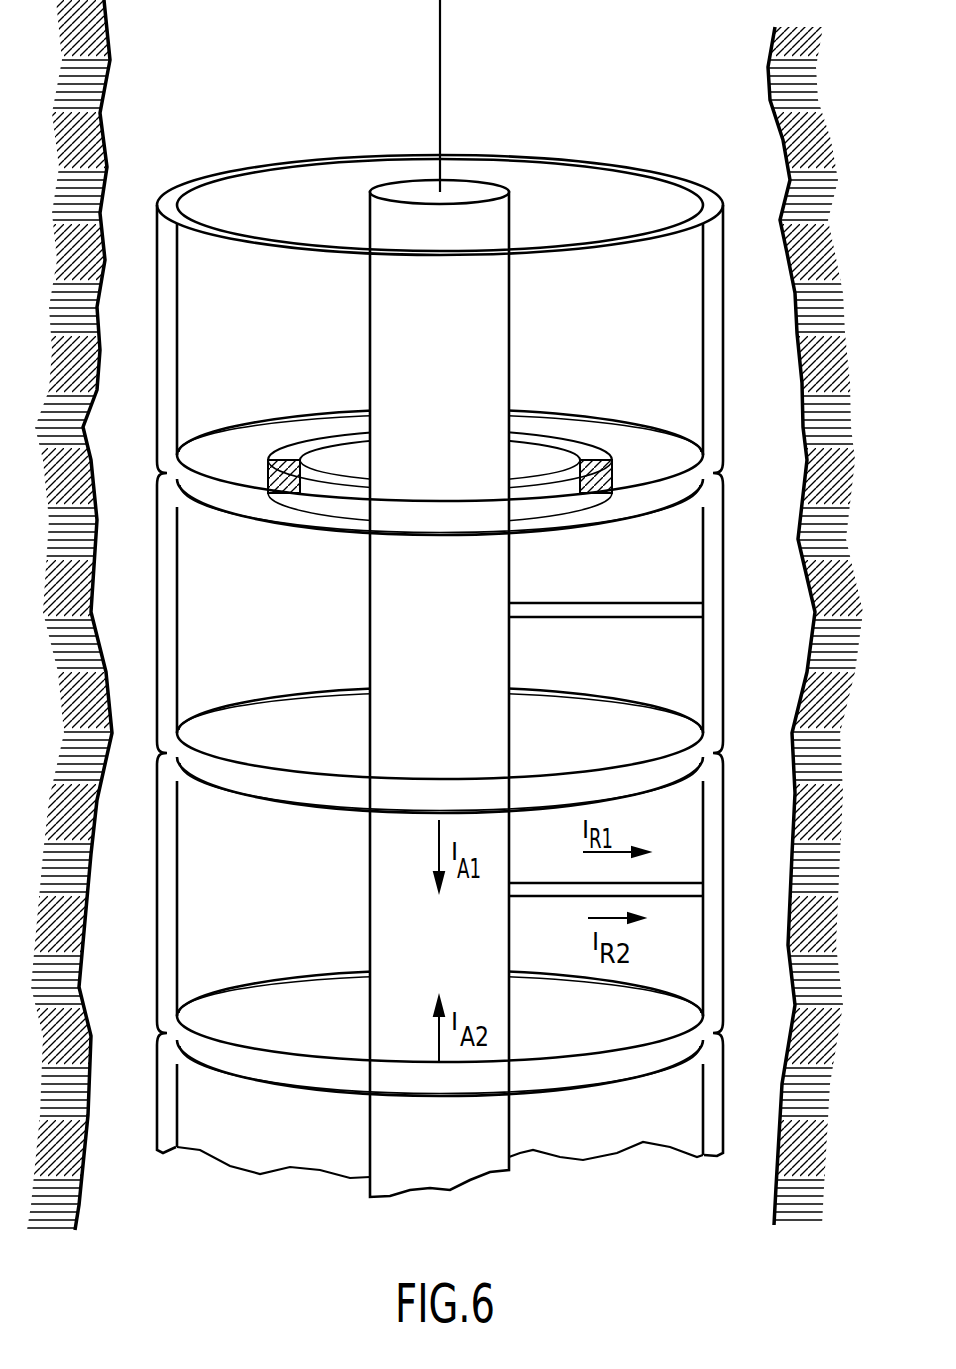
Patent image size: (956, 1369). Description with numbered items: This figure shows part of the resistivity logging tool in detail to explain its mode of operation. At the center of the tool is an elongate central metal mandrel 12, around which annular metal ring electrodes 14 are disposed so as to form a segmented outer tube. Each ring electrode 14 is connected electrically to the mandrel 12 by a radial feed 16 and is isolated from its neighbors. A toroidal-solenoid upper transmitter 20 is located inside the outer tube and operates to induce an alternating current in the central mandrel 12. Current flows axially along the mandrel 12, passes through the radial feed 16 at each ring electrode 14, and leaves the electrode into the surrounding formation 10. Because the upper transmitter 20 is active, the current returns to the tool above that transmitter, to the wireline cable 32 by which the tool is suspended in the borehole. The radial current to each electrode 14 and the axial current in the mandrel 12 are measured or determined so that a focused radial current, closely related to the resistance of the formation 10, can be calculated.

The formation 10 is at (47, 437).
The central metal mandrel 12 is at (497, 668).
The ring electrode 14 is at (727, 956).
The radial feed 16 is at (673, 882).
The upper transmitter 20 is at (614, 480).
The wireline cable 32 is at (442, 103).